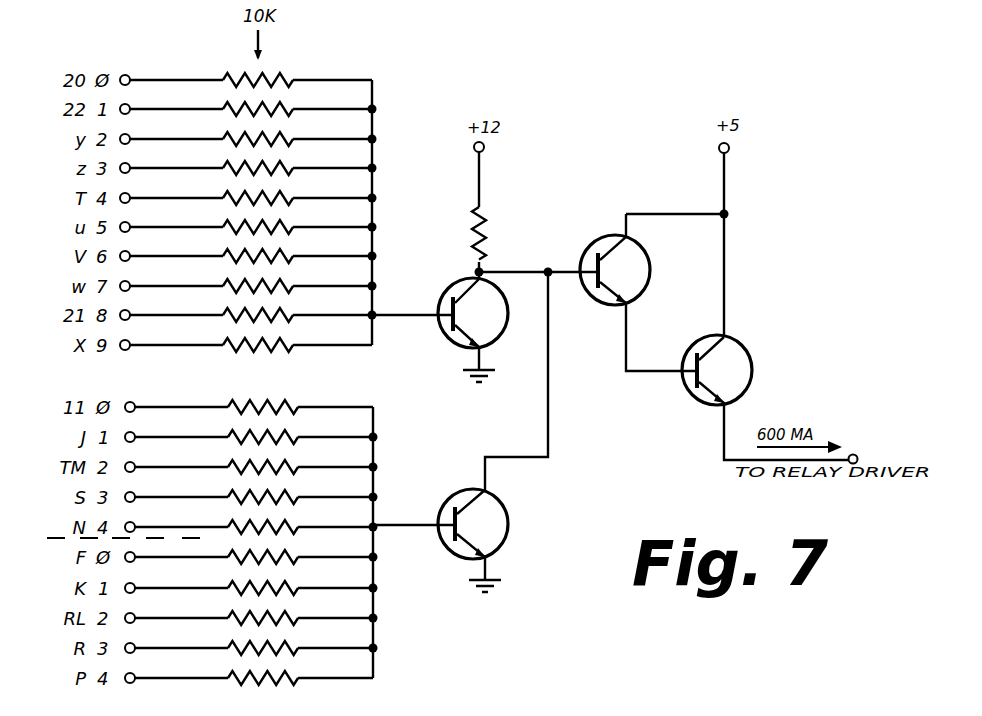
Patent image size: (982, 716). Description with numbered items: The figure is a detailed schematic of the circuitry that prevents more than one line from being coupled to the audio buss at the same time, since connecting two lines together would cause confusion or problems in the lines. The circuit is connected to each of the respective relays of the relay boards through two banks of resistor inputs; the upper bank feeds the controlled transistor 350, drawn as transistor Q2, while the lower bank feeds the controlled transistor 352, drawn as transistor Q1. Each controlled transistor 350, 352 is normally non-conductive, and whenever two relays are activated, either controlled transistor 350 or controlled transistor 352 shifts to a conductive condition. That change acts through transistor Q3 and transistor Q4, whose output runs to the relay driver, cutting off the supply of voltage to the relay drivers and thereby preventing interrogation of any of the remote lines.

The controlled transistor 350 is at (440, 317).
The controlled transistor 352 is at (466, 530).
The transistor Q1 is at (508, 524).
The transistor Q2 is at (447, 338).
The transistor Q3 is at (651, 282).
The transistor Q4 is at (686, 400).